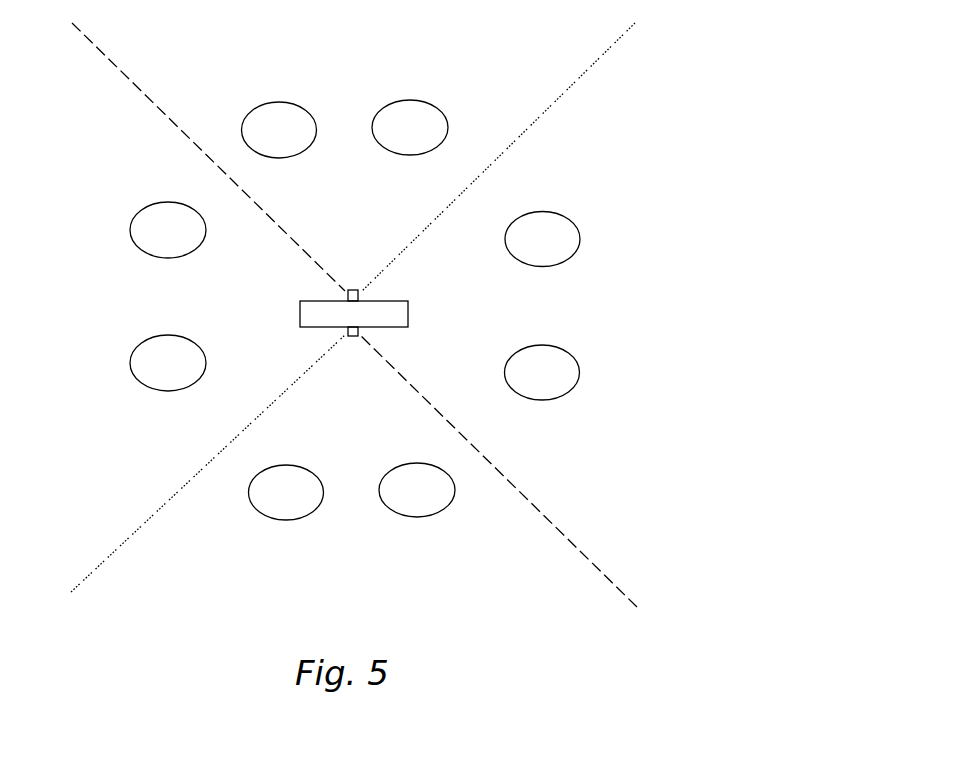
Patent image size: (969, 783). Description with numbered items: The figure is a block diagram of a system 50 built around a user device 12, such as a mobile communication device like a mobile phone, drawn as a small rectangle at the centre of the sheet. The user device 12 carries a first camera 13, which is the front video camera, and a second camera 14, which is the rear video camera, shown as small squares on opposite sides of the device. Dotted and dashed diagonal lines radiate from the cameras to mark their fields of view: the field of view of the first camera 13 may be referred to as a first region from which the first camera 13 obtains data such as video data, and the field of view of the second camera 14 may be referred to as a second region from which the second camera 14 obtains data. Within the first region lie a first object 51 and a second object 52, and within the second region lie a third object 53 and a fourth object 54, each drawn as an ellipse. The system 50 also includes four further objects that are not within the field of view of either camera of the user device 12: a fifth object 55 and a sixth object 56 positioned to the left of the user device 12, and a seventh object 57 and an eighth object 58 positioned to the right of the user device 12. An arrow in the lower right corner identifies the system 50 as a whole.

The user device 12 is at (410, 317).
The first camera 13 is at (353, 290).
The second camera 14 is at (353, 336).
The system 50 is at (762, 554).
The first object 51 is at (279, 100).
The second object 52 is at (422, 101).
The third object 53 is at (288, 524).
The fourth object 54 is at (443, 510).
The fifth object 55 is at (132, 245).
The sixth object 56 is at (132, 383).
The seventh object 57 is at (570, 216).
The eighth object 58 is at (578, 378).